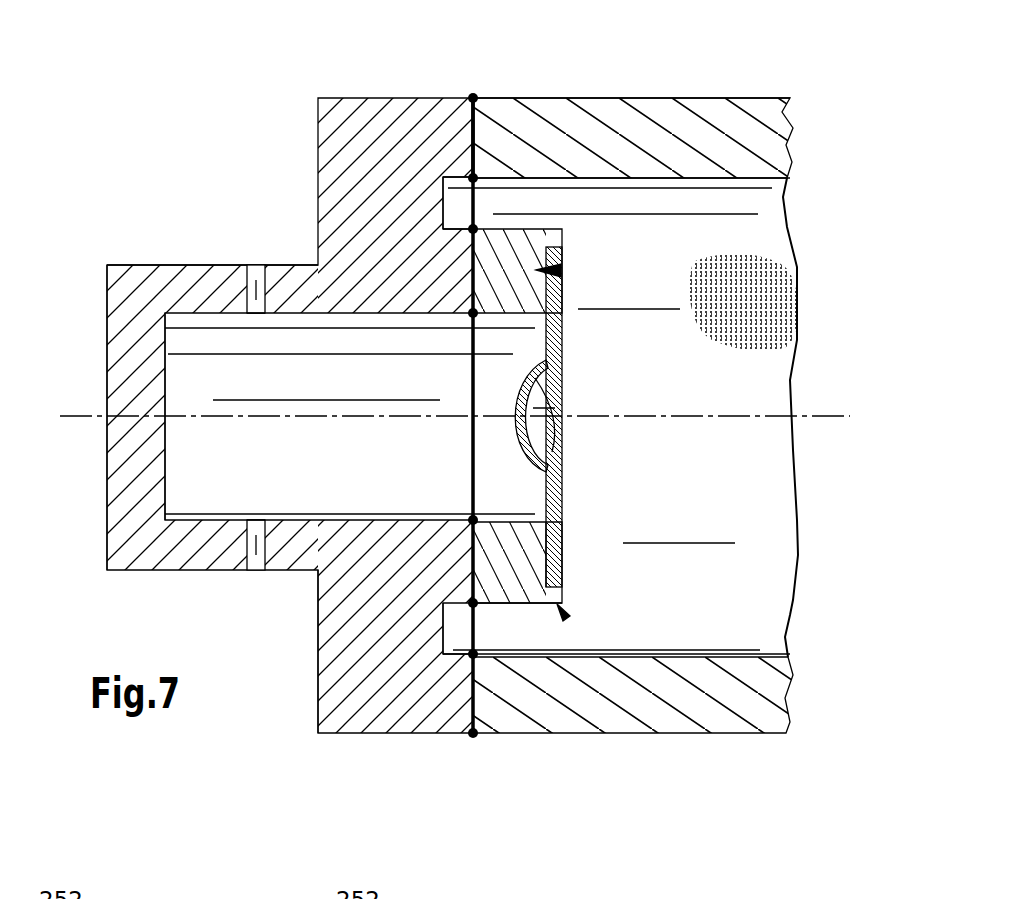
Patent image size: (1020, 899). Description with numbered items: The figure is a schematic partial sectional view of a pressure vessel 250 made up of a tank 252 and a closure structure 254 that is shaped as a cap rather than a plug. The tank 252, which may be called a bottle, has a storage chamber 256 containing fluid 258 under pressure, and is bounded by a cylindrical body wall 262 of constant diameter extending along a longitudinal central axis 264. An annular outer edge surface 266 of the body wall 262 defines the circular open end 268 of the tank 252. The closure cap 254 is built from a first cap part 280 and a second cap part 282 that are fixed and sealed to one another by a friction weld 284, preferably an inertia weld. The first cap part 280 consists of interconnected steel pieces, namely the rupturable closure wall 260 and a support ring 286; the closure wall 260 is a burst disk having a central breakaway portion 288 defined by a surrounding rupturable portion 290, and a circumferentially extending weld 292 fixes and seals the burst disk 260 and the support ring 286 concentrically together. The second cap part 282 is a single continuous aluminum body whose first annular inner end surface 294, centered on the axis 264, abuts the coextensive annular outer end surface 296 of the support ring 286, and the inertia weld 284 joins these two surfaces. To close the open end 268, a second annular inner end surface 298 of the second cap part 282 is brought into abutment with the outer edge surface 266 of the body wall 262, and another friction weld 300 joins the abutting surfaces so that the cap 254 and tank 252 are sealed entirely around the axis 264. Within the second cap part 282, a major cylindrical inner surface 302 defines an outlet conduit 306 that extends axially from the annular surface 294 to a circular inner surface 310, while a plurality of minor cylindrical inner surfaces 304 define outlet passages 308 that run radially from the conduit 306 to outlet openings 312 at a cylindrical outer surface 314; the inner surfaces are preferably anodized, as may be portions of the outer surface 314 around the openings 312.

The pressure vessel 250 is at (452, 401).
The tank 252 is at (651, 92).
The closure structure 254 is at (352, 92).
The storage chamber 256 is at (622, 284).
The fluid 258 is at (735, 320).
The closure wall 260 is at (557, 352).
The body wall 262 is at (722, 118).
The longitudinal central axis 264 is at (822, 410).
The annular outer edge surface 266 is at (443, 177).
The open end 268 is at (473, 202).
The first cap part 280 is at (568, 618).
The second cap part 282 is at (312, 645).
The friction weld 284 is at (470, 280).
The support ring 286 is at (527, 229).
The central breakaway portion 288 is at (515, 436).
The rupturable portion 290 is at (543, 502).
The circumferentially extending weld 292 is at (560, 564).
The first annular inner end surface 294 is at (520, 601).
The annular outer end surface 296 is at (467, 578).
The second annular inner end surface 298 is at (476, 113).
The friction weld 300 is at (482, 137).
The major cylindrical inner surface 302 is at (364, 316).
The minor cylindrical inner surfaces 304 is at (252, 316).
The outlet conduit 306 is at (378, 397).
The outlet passages 308 is at (258, 318).
The circular inner surface 310 is at (165, 443).
The outlet openings 312 is at (259, 258).
The cylindrical outer surface 314 is at (207, 262).